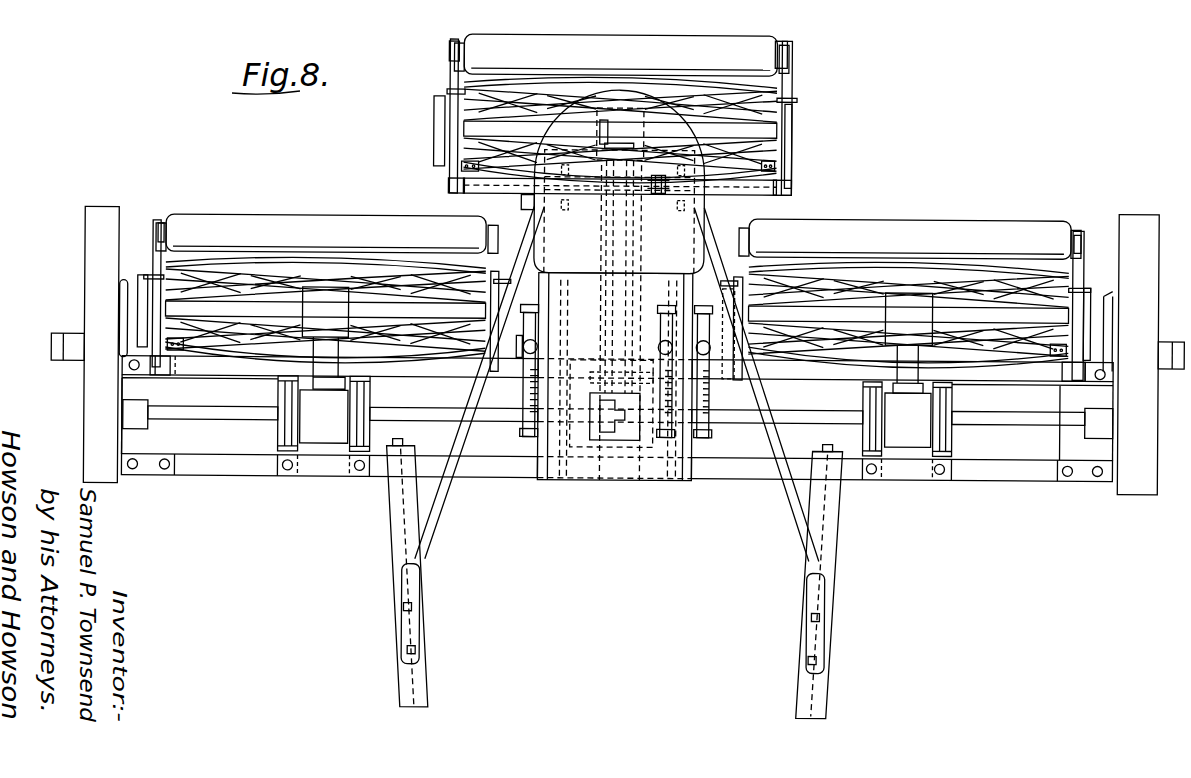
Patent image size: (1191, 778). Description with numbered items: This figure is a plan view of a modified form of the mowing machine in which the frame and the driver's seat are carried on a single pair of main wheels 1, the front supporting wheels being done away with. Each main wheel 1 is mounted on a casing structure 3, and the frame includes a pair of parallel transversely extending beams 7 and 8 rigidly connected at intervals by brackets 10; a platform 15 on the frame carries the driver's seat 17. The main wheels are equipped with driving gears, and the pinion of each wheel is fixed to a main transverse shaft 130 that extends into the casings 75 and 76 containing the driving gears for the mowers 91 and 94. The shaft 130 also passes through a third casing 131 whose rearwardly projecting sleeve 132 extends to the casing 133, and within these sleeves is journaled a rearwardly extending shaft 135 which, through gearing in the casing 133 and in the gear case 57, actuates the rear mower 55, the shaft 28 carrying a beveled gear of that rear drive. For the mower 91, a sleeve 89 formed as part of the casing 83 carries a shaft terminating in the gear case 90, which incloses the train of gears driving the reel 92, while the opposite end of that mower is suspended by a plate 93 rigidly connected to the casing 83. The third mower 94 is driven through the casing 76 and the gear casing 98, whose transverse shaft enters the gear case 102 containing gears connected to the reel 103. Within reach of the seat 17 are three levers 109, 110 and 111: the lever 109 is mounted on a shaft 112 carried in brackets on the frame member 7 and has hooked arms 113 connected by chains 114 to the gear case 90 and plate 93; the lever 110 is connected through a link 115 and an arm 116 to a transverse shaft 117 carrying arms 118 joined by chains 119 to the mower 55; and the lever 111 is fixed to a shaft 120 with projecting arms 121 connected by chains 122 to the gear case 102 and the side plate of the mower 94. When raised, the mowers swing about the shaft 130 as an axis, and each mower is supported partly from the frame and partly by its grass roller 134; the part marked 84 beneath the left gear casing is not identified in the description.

The main supporting wheels 1 is at (1141, 216).
The casing structures 3 is at (124, 283).
The transversely extending beam 7 is at (425, 370).
The transversely extending beam 8 is at (495, 474).
The brackets 10 is at (280, 437).
The platform 15 is at (690, 447).
The driver's seat 17 is at (720, 212).
The shaft 28 is at (423, 688).
The mower 55 is at (785, 92).
The removable cover 57 is at (440, 126).
The casing 75 is at (324, 416).
The casing 76 is at (908, 420).
The casing structure 83 is at (325, 332).
The coupling 84 is at (329, 383).
The sleeve 89 is at (325, 310).
The gear case 90 is at (146, 311).
The mower 91 is at (151, 297).
The reel 92 is at (238, 264).
The plate 93 is at (497, 338).
The third mower 94 is at (1085, 306).
The gear casing 98 is at (909, 343).
The gear case 102 is at (730, 288).
The reel 103 is at (940, 268).
The lever 109 is at (537, 347).
The lever 110 is at (658, 346).
The lever 111 is at (705, 352).
The shaft 112 is at (236, 368).
The hooked arms 113 is at (163, 310).
The chains 114 is at (147, 279).
The link 115 is at (657, 261).
The arm 116 is at (653, 177).
The transverse shaft 117 is at (578, 188).
The arms 118 is at (445, 150).
The chains 119 is at (448, 92).
The shaft 120 is at (821, 371).
The projecting arms 121 is at (750, 263).
The chains 122 is at (730, 281).
The main transverse shaft 130 is at (222, 418).
The third casing 131 is at (617, 444).
The rearwardly projecting sleeve 132 is at (607, 287).
The casing 133 is at (622, 105).
The grass rollers 134 is at (590, 29).
The rearwardly extending shaft 135 is at (608, 231).